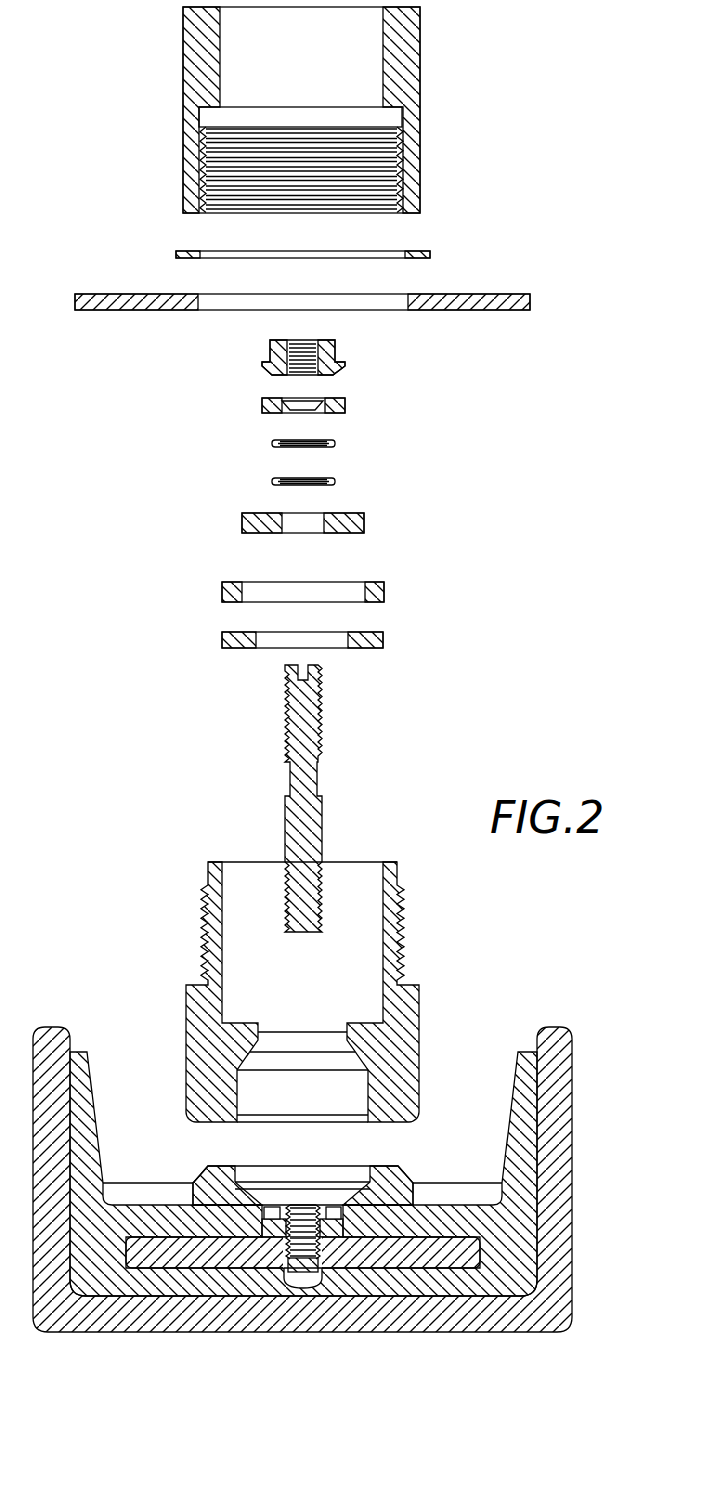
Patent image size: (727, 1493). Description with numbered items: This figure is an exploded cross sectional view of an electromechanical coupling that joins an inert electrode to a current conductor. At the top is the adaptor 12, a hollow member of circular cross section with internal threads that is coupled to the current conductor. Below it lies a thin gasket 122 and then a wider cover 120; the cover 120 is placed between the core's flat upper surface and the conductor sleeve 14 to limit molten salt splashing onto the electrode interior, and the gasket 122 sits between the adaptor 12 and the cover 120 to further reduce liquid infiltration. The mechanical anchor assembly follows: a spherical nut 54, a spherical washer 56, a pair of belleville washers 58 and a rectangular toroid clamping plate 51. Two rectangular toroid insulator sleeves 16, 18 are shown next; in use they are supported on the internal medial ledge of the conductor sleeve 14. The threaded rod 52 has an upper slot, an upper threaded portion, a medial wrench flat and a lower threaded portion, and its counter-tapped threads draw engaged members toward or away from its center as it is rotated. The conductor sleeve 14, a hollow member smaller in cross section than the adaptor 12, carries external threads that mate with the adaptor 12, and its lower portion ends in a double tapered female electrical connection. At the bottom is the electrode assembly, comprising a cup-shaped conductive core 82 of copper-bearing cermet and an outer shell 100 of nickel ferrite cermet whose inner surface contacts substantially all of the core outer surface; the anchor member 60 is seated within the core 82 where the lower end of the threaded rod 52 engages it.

The adaptor 12 is at (426, 125).
The gasket 122 is at (438, 246).
The cover 120 is at (539, 293).
The spherical nut 54 is at (349, 349).
The spherical washer 56 is at (357, 403).
The belleville washers 58 is at (350, 441).
The clamping plate 51 is at (380, 520).
The insulator sleeve 16 is at (400, 587).
The insulator sleeve 18 is at (400, 641).
The threaded rod 52 is at (342, 725).
The conductor sleeve 14 is at (432, 975).
The conductive core 82 is at (520, 1045).
The anchor member 60 is at (461, 1220).
The outer shell 100 is at (575, 1280).